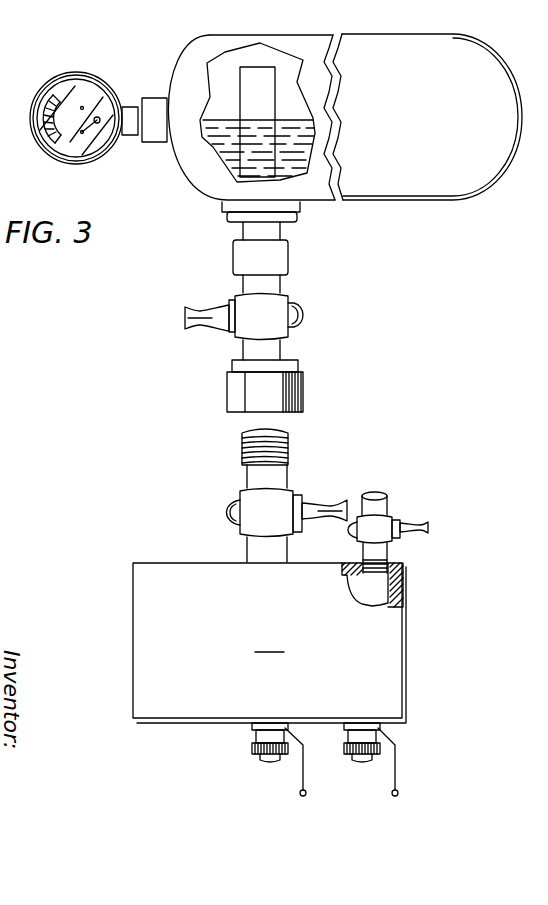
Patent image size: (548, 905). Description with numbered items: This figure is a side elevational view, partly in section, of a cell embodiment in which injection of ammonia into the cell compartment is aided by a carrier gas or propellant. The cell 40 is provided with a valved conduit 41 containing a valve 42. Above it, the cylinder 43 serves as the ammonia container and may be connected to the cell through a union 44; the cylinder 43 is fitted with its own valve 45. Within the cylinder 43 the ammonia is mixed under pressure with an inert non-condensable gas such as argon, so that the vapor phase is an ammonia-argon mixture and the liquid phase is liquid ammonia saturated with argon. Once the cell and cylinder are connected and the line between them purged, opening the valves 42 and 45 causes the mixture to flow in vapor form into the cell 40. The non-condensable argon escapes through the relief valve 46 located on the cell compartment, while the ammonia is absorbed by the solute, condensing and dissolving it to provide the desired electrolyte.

The cell 40 is at (269, 679).
The valved conduit 41 is at (258, 550).
The valve 42 is at (253, 502).
The cylinder 43 is at (413, 121).
The union 44 is at (287, 442).
The valve 45 is at (278, 303).
The relief valve 46 is at (383, 520).